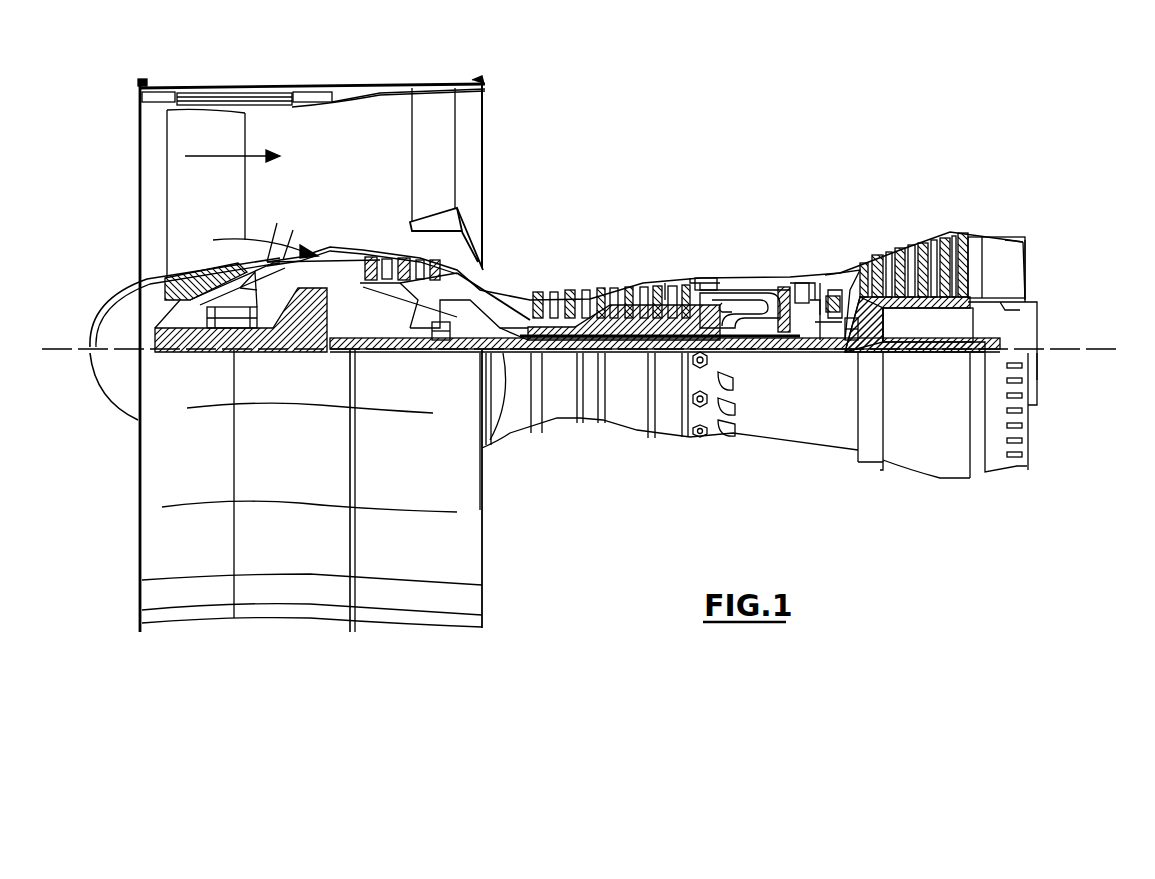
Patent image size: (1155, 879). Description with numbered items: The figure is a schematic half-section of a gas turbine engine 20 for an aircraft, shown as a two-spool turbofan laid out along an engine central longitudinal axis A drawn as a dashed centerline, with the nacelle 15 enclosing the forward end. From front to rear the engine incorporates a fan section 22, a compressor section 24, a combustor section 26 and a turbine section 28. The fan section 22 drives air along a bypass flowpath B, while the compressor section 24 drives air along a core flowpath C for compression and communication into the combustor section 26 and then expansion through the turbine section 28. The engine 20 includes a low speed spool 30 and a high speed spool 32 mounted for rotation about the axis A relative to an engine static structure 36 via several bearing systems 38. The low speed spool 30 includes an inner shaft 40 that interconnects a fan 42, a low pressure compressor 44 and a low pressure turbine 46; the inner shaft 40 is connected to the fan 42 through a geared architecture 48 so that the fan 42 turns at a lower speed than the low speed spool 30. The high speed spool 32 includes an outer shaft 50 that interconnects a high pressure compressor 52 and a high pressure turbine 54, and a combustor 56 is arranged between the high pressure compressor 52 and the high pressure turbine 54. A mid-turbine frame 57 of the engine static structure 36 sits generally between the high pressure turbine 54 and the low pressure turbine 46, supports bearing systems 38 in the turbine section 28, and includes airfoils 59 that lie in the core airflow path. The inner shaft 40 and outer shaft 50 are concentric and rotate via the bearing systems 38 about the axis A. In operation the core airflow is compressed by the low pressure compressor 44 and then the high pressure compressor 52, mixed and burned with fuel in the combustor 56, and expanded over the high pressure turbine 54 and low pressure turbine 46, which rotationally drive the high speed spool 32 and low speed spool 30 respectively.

The nacelle 15 is at (309, 90).
The gas turbine engine 20 is at (745, 131).
The fan section 22 is at (243, 70).
The compressor section 24 is at (531, 262).
The combustor section 26 is at (739, 248).
The turbine section 28 is at (878, 216).
The low speed spool 30 is at (631, 362).
The high speed spool 32 is at (674, 300).
The engine static structure 36 is at (669, 446).
The bearing systems 38 is at (441, 340).
The inner shaft 40 is at (505, 407).
The fan 42 is at (217, 206).
The low pressure compressor 44 is at (370, 273).
The low pressure turbine 46 is at (920, 250).
The geared architecture 48 is at (318, 335).
The outer shaft 50 is at (748, 330).
The high pressure compressor 52 is at (608, 318).
The high pressure turbine 54 is at (794, 280).
The combustor 56 is at (741, 297).
The mid-turbine frame 57 is at (842, 266).
The airfoils 59 is at (865, 317).
The engine central longitudinal axis A is at (1113, 352).
The bypass flow path B is at (220, 156).
The core flow path C is at (258, 244).